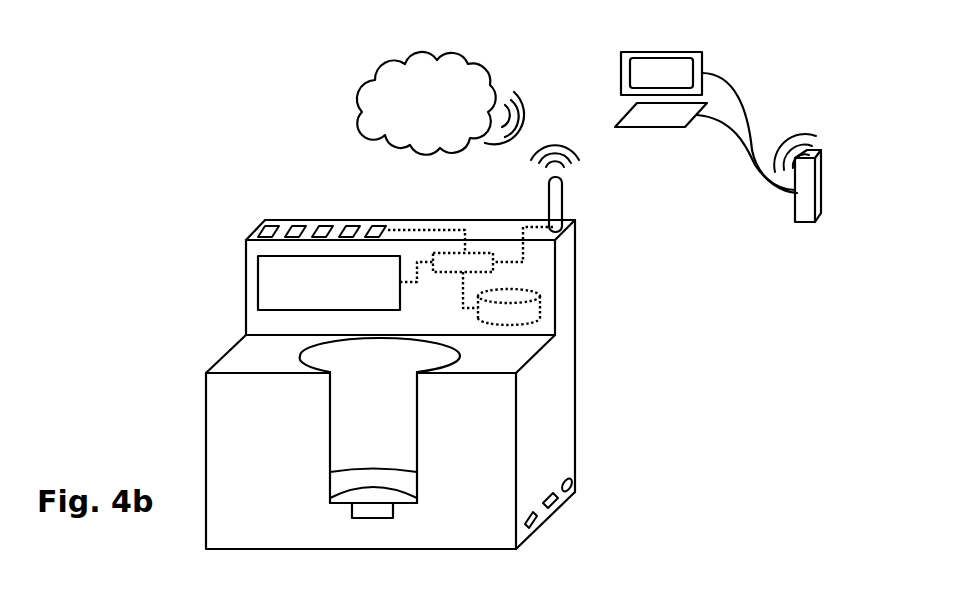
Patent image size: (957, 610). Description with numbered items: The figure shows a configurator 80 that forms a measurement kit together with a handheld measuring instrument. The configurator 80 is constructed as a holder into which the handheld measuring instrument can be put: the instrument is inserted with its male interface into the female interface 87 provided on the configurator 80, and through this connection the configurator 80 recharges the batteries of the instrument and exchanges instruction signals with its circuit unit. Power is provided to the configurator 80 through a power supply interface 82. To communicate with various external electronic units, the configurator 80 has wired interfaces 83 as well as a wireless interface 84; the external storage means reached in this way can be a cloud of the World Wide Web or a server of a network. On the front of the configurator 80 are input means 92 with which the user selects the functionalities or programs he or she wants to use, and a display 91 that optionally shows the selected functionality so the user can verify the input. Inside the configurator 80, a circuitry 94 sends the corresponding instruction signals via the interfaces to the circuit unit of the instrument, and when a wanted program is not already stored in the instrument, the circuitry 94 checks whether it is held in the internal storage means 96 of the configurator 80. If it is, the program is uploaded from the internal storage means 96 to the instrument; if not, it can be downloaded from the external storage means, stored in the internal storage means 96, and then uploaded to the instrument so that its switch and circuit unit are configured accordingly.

The configurator 80 is at (170, 387).
The power supply interface 82 is at (572, 482).
The wired interfaces 83 is at (531, 519).
The wireless interface 84 is at (557, 197).
The female interface 87 is at (276, 416).
The display 91 is at (277, 282).
The input means 92 is at (302, 208).
The circuitry 94 is at (482, 262).
The internal storage means 96 is at (527, 310).